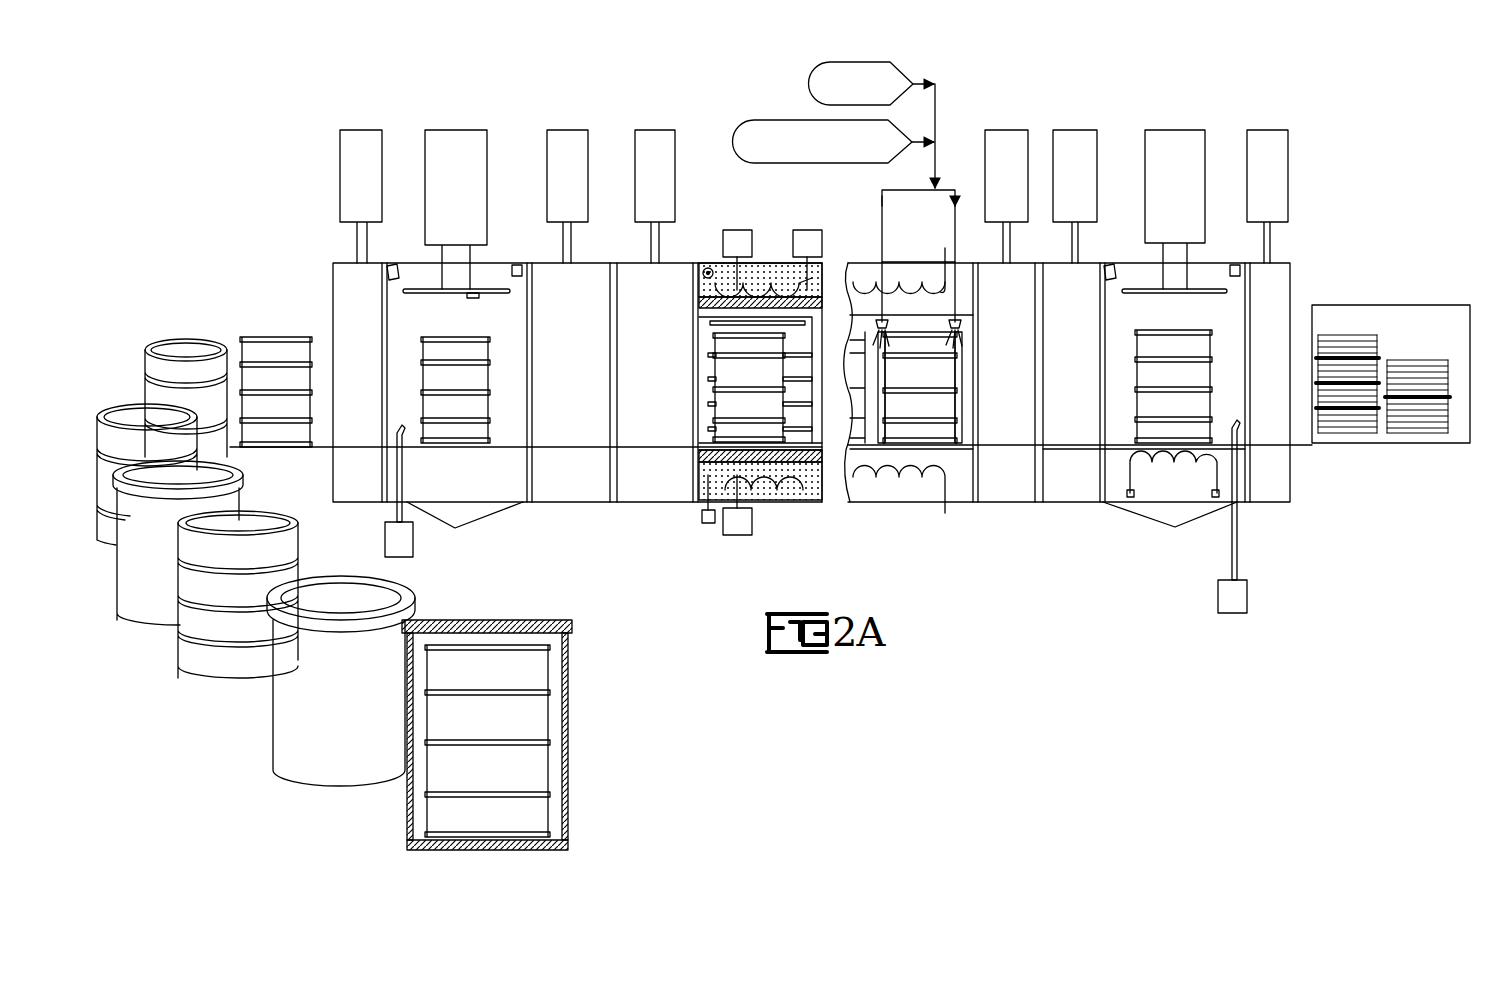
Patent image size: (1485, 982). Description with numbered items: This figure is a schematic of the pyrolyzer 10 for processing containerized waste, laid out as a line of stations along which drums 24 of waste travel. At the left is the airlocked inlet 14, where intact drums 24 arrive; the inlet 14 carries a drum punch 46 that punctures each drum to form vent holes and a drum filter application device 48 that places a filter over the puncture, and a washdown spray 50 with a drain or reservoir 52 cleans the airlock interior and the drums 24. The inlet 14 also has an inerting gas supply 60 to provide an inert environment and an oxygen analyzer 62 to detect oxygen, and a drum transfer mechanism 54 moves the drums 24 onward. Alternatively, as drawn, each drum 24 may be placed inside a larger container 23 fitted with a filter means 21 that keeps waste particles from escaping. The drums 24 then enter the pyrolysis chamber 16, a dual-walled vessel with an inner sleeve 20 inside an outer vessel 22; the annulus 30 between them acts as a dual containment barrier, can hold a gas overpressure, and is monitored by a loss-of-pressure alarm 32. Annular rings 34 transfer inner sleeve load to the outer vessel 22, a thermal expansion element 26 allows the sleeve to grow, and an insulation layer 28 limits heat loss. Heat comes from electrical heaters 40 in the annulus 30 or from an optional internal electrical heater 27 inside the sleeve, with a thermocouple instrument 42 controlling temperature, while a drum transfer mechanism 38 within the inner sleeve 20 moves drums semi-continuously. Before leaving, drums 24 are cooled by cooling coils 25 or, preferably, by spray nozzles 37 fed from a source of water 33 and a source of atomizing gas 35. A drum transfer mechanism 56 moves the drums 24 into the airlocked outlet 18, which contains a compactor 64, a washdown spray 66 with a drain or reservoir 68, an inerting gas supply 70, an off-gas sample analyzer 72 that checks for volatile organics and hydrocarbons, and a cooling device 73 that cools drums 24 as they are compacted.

The pyrolyzer 10 is at (756, 194).
The waste inlet 14 is at (500, 530).
The pyrolysis chamber 16 is at (862, 504).
The gas outlet 18 is at (1197, 534).
The inner sleeve 20 is at (936, 316).
The filter means 21 is at (530, 622).
The outer vessel 22 is at (884, 262).
The larger container 23 is at (157, 597).
The drum 24 is at (272, 352).
The cooling coils 25 is at (950, 488).
The thermal expansion element 26 is at (978, 340).
The internal electrical heater 27 is at (816, 229).
The insulation layer 28 is at (805, 501).
The annulus 30 is at (960, 456).
The loss-of-pressure alarm 32 is at (700, 262).
The source of water 33 is at (808, 84).
The annular rings 34 is at (698, 297).
The source of atomizing gas 35 is at (792, 120).
The spray nozzles 37 is at (892, 326).
The drum transfer mechanism 38 is at (700, 441).
The electrical heaters 40 is at (752, 500).
The thermocouple instrument 42 is at (702, 515).
The drum punch 46 is at (428, 289).
The drum filter application device 48 is at (476, 298).
The washdown spray 50 is at (387, 272).
The drain or reservoir 52 is at (437, 527).
The drum transfer mechanism 54 is at (508, 447).
The drum transfer mechanism 56 is at (1115, 448).
The inerting gas supply 60 is at (413, 555).
The oxygen analyzer 62 is at (520, 265).
The compactor 64 is at (1205, 289).
The washdown spray 66 is at (1110, 266).
The drain or reservoir 68 is at (1150, 522).
The inerting gas supply 70 is at (1247, 598).
The off-gas sample analyzer 72 is at (1240, 265).
The cooling device 73 is at (1126, 472).